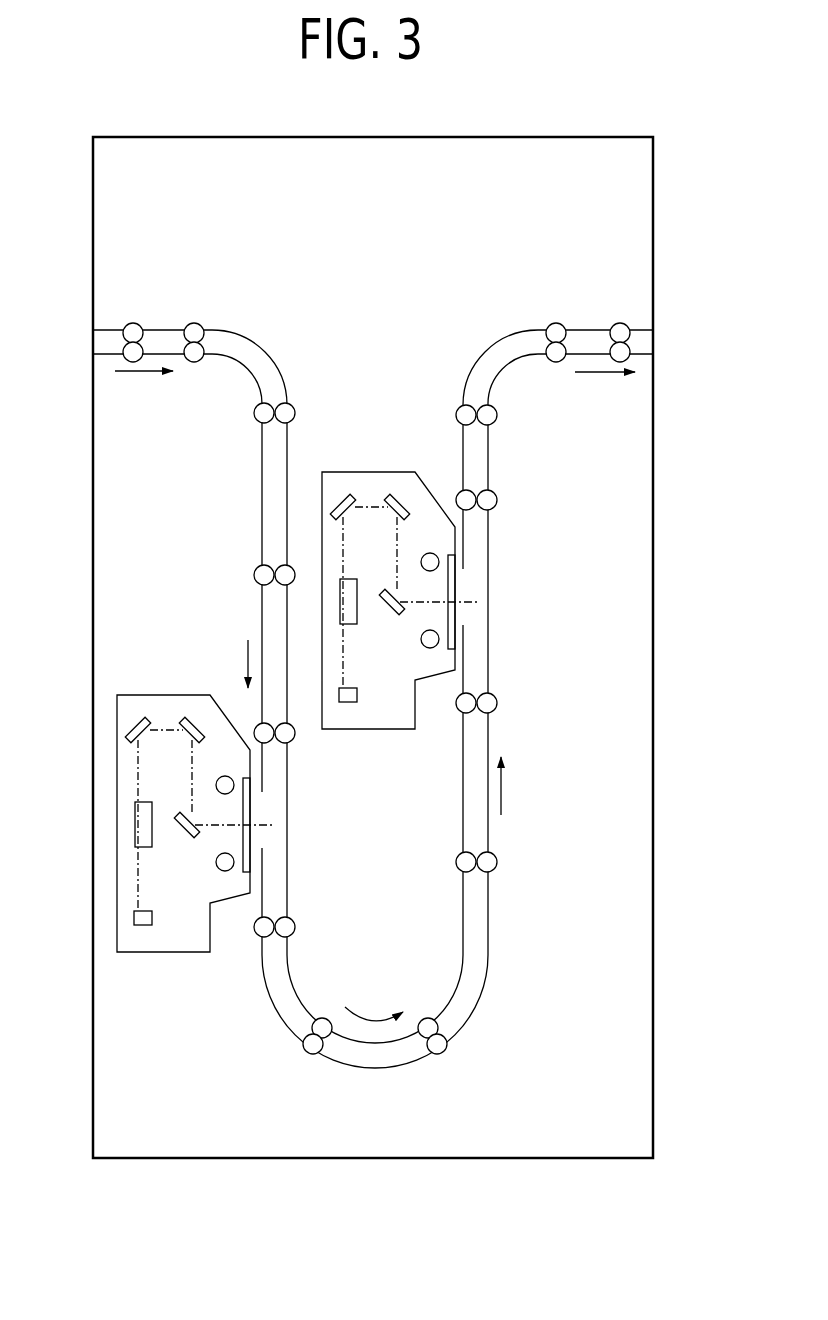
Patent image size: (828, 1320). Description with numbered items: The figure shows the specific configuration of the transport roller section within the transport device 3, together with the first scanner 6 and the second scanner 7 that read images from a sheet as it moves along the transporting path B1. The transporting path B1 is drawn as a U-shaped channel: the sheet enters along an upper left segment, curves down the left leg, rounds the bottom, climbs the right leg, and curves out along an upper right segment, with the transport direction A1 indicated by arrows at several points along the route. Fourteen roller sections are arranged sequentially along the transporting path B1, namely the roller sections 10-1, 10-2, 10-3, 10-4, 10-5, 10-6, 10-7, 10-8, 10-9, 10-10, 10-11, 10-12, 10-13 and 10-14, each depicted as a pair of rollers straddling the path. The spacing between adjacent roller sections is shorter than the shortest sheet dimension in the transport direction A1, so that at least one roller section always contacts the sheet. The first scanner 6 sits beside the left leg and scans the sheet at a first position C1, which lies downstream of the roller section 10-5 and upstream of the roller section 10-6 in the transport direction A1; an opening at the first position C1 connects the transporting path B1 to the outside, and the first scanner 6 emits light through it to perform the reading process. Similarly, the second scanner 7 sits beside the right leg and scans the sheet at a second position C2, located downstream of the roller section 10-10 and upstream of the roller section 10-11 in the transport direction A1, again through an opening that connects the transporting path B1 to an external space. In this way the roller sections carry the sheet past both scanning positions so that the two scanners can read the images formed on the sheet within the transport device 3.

The transport device 3 is at (142, 178).
The first scanner 6 is at (177, 680).
The second scanner 7 is at (363, 462).
The roller section 10-1 is at (134, 320).
The roller section 10-2 is at (197, 320).
The roller section 10-3 is at (250, 414).
The roller section 10-4 is at (250, 574).
The roller section 10-5 is at (302, 738).
The roller section 10-6 is at (298, 924).
The roller section 10-7 is at (298, 1050).
The roller section 10-8 is at (450, 1049).
The roller section 10-9 is at (500, 862).
The roller section 10-10 is at (503, 705).
The roller section 10-11 is at (503, 501).
The roller section 10-12 is at (503, 419).
The roller section 10-13 is at (552, 318).
The roller section 10-14 is at (617, 318).
The transporting path B1 is at (277, 497).
The first position C1 is at (297, 823).
The second position C2 is at (497, 600).
The transport direction A1 is at (375, 696).